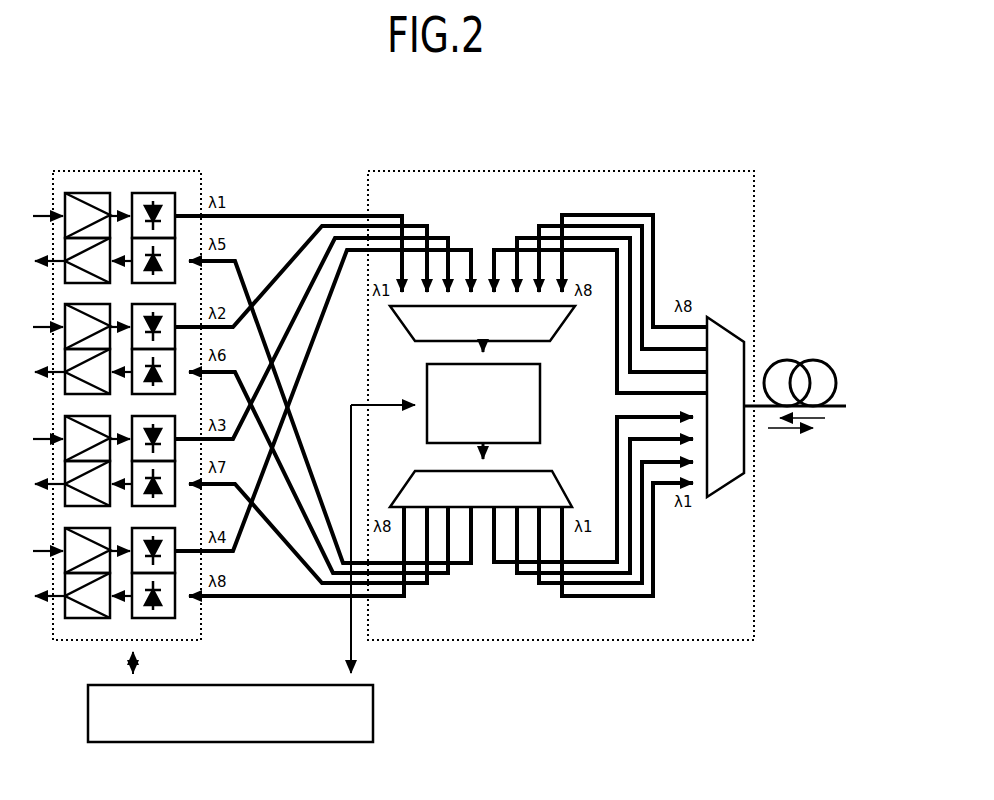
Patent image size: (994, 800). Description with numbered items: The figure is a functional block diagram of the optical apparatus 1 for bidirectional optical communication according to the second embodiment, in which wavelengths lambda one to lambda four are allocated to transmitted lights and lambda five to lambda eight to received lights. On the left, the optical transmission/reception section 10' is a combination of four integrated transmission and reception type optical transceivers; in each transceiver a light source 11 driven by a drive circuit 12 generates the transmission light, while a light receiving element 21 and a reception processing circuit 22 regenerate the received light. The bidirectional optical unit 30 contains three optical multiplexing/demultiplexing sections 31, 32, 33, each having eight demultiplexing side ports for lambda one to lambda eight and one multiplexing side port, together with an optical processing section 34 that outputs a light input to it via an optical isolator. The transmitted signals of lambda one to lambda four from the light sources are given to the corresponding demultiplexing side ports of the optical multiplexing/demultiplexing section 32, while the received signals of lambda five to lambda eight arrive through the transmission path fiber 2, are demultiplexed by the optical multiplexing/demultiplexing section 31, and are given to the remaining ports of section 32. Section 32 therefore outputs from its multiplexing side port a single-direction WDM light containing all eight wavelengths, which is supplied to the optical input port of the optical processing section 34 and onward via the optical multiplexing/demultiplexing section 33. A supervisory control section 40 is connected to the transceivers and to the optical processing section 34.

The optical apparatus 1 is at (796, 150).
The transmission path fiber 2 is at (803, 361).
The optical transmission/reception section 10' is at (116, 383).
The light source 11 is at (175, 203).
The drive circuit 12 is at (110, 202).
The light receiving element 21 is at (175, 256).
The reception processing circuit 22 is at (65, 277).
The bidirectional optical unit 30 is at (676, 171).
The optical multiplexing/demultiplexing section 31 is at (728, 490).
The optical multiplexing/demultiplexing section 32 is at (425, 343).
The optical multiplexing/demultiplexing section 33 is at (536, 469).
The optical processing section 34 is at (542, 401).
The supervisory control section 40 is at (373, 712).